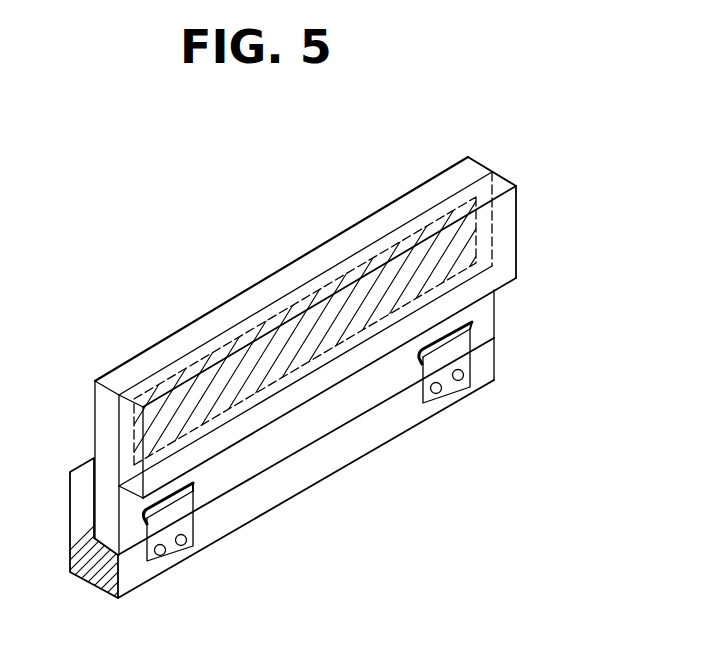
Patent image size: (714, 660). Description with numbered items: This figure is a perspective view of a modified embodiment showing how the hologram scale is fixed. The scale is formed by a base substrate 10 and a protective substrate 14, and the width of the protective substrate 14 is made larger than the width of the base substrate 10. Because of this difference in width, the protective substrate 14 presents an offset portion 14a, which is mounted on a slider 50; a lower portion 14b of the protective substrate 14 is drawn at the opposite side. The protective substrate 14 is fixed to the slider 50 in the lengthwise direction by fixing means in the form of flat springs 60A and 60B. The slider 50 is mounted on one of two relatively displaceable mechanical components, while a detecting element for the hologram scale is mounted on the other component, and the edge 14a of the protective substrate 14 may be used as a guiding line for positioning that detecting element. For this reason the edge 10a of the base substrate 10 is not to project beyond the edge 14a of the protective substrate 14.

The base substrate 10 is at (511, 252).
The edge of the base substrate 10a is at (518, 188).
The protective substrate 14 is at (260, 278).
The offset portion (edge) of the protective substrate 14a is at (480, 162).
The lower plate of frame 14b is at (496, 310).
The slider 50 is at (77, 574).
The flat spring 60A is at (203, 554).
The flat spring 60B is at (459, 394).